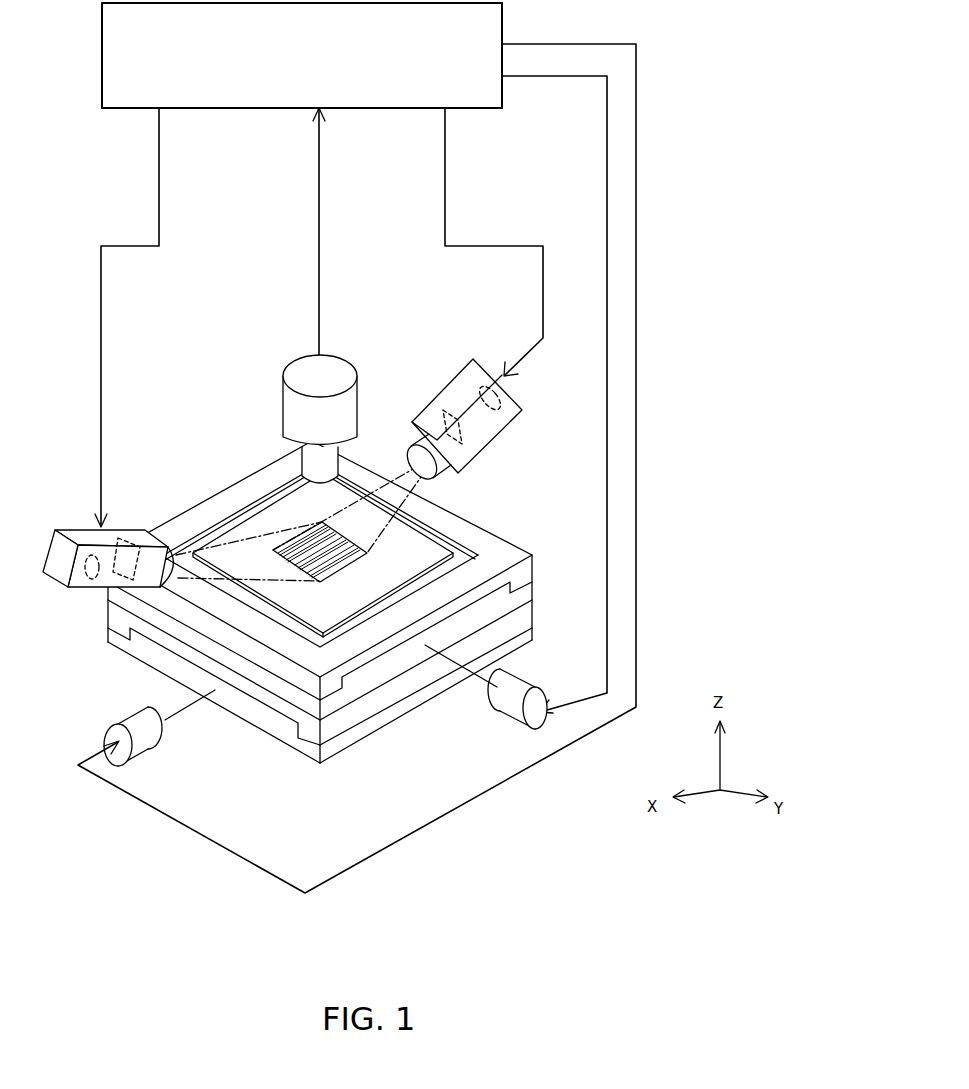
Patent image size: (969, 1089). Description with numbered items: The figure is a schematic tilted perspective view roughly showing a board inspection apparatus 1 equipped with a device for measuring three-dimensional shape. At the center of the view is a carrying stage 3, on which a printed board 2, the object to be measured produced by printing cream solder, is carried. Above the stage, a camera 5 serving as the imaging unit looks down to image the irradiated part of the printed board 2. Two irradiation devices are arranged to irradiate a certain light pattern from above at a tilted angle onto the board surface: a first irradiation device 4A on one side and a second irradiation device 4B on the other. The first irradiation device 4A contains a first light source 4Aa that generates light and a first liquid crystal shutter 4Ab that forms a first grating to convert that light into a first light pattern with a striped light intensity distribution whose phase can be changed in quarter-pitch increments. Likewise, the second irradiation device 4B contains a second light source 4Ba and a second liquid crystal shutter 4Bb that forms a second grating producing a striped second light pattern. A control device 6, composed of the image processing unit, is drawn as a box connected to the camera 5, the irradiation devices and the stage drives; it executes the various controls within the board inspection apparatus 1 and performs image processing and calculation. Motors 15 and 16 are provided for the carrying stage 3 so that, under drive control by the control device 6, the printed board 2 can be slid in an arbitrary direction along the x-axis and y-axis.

The board inspection apparatus 1 is at (538, 797).
The printed board 2 is at (283, 513).
The carrying stage 3 is at (195, 502).
The first irradiation device 4A is at (93, 562).
The first light source 4Aa is at (78, 589).
The first liquid crystal shutter 4Ab is at (107, 583).
The second irradiation device 4B is at (487, 418).
The second light source 4Ba is at (504, 400).
The second liquid crystal shutter 4Bb is at (488, 438).
The camera 5 is at (282, 413).
The control device 6 is at (195, 110).
The motor 15 is at (116, 713).
The motor 16 is at (502, 720).